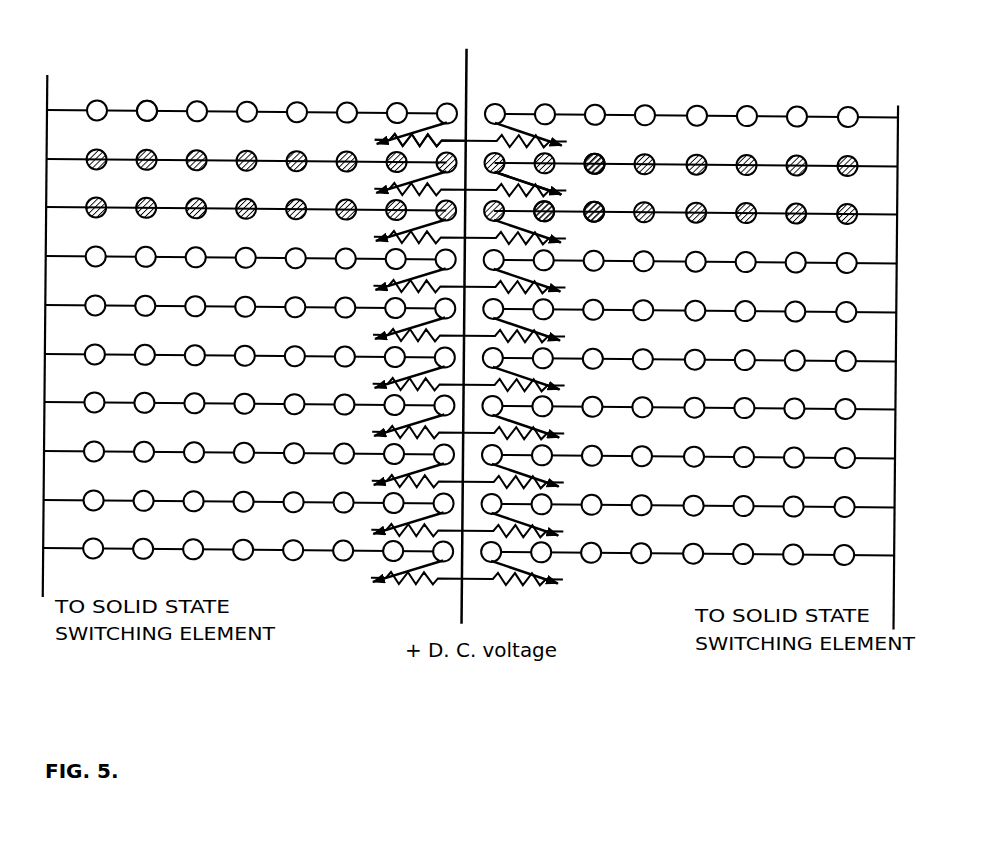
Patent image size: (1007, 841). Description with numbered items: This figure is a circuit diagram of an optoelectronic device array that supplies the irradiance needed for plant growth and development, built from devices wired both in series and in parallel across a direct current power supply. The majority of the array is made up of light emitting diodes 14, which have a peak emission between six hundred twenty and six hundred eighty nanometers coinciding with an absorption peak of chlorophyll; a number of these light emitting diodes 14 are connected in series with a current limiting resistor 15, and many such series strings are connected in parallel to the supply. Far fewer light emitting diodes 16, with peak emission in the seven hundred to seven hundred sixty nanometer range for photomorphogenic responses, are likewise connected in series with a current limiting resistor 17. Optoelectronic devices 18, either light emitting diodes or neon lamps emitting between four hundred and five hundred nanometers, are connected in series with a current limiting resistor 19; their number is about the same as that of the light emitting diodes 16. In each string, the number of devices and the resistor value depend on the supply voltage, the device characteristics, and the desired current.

The light emitting diode 14 is at (147, 101).
The current limiting resistor 15 is at (420, 132).
The light emitting diode 16 is at (601, 156).
The current limiting resistor 17 is at (527, 178).
The optoelectronic device 18 is at (611, 203).
The current limiting resistor 19 is at (542, 220).